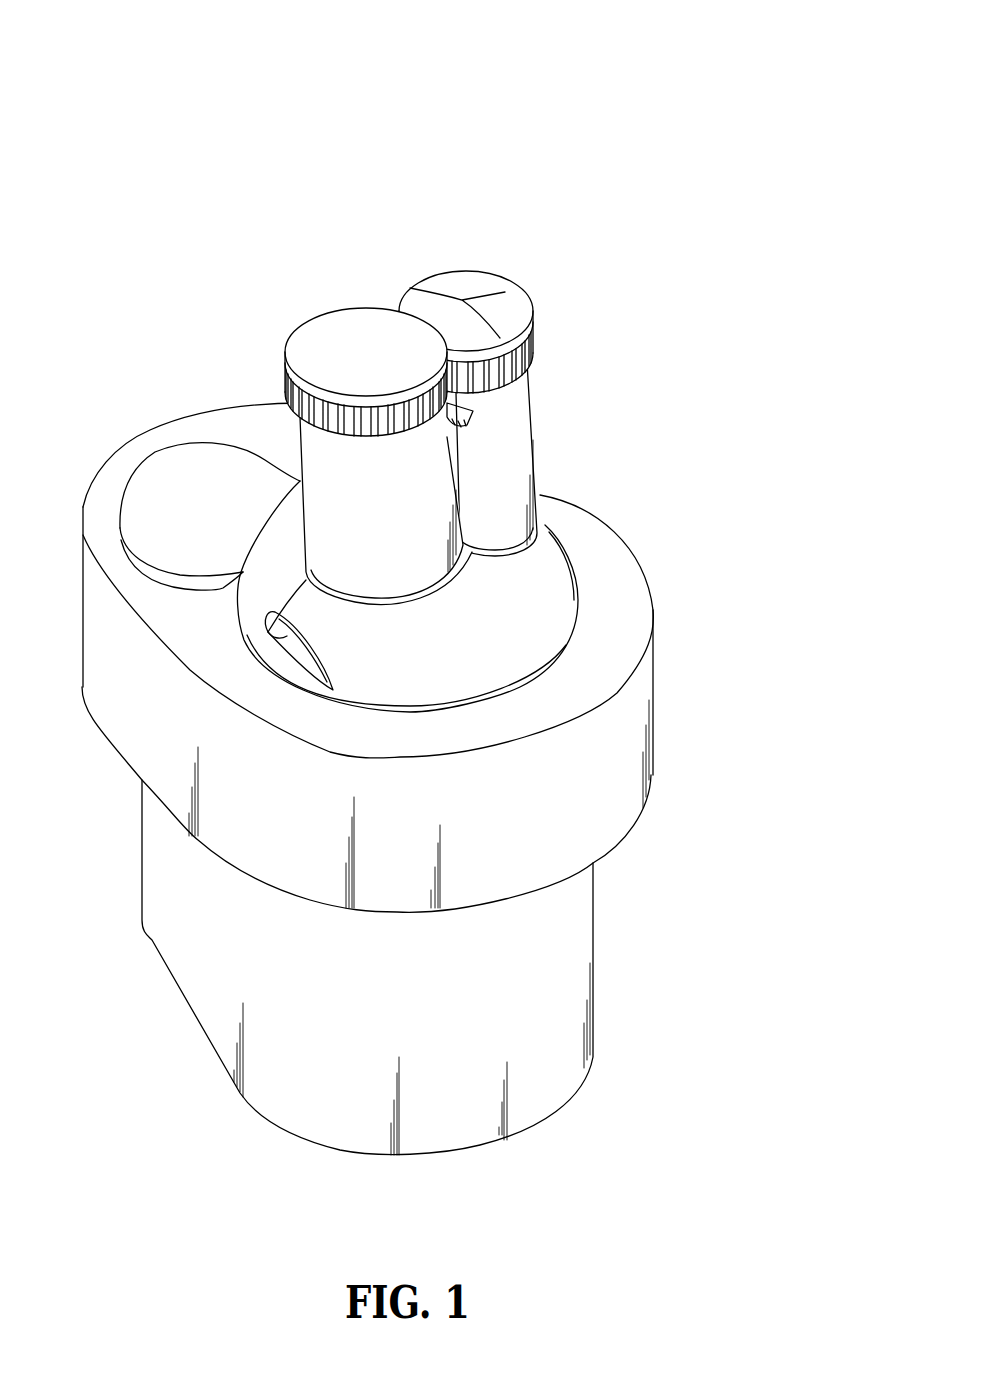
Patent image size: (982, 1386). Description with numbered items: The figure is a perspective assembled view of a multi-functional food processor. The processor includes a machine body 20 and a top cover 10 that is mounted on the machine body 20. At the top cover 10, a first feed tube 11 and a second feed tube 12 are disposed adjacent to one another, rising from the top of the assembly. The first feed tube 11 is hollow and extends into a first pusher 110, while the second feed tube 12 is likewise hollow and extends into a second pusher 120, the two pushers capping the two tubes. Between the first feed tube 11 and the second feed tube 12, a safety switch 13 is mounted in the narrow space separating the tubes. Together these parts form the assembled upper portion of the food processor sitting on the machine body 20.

The top cover 10 is at (387, 304).
The first feed tube 11 is at (318, 455).
The second feed tube 12 is at (520, 421).
The safety switch 13 is at (470, 424).
The machine body 20 is at (717, 728).
The first pusher 110 is at (326, 340).
The second pusher 120 is at (432, 292).